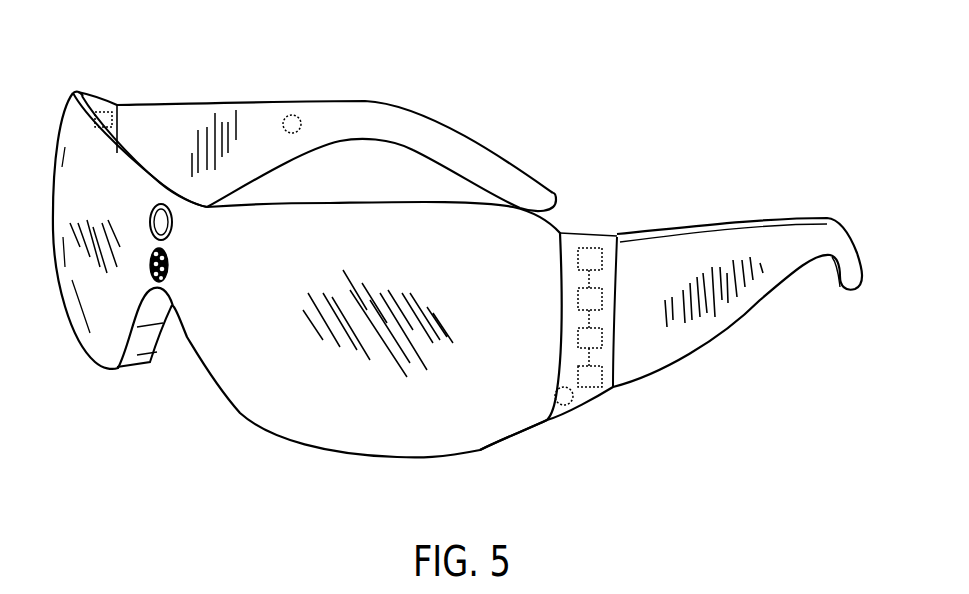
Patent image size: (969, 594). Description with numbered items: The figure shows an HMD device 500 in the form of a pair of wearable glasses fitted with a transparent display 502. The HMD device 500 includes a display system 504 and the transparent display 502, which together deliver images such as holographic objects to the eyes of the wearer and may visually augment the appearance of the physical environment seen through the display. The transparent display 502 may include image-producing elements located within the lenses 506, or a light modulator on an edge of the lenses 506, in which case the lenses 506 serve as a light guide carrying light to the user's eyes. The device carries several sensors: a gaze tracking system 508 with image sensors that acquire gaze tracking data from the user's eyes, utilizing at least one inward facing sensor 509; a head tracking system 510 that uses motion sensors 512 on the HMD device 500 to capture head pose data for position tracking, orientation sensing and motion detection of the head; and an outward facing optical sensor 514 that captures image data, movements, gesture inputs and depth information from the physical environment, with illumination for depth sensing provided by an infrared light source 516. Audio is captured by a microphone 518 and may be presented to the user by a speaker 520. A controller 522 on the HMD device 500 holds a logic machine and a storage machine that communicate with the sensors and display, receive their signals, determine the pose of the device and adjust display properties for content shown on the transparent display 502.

The HMD device 500 is at (510, 82).
The transparent display 502 is at (257, 393).
The display system 504 is at (592, 247).
The lenses 506 is at (143, 340).
The gaze tracking system 508 is at (602, 297).
The inward facing sensor 509 is at (210, 198).
The head tracking system 510 is at (602, 337).
The motion sensors 512 is at (600, 372).
The optical sensor 514 is at (180, 226).
The infrared light source 516 is at (178, 272).
The microphone 518 is at (574, 409).
The speaker 520 is at (295, 108).
The controller 522 is at (105, 96).